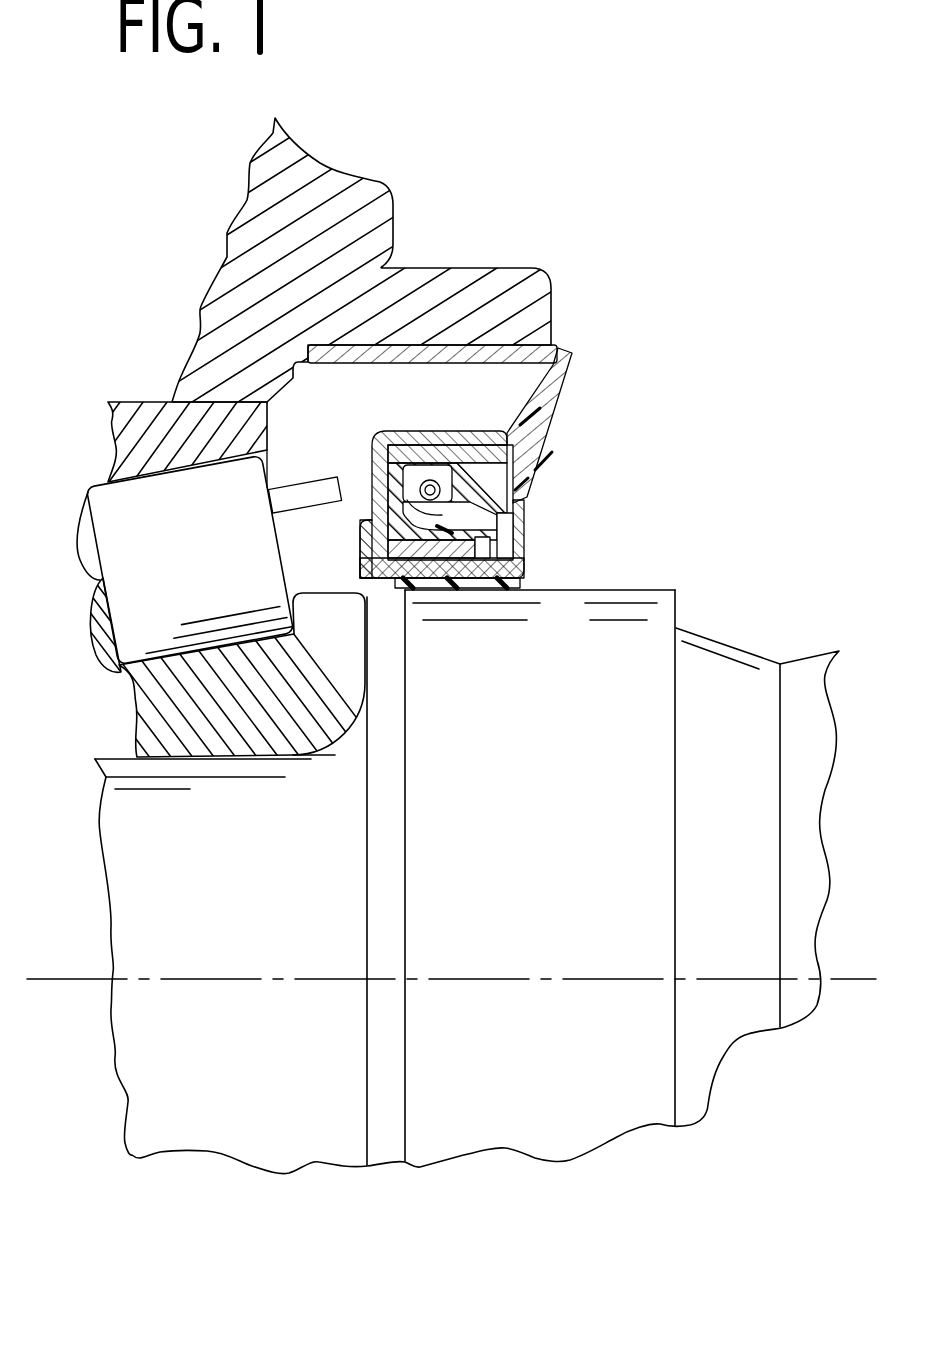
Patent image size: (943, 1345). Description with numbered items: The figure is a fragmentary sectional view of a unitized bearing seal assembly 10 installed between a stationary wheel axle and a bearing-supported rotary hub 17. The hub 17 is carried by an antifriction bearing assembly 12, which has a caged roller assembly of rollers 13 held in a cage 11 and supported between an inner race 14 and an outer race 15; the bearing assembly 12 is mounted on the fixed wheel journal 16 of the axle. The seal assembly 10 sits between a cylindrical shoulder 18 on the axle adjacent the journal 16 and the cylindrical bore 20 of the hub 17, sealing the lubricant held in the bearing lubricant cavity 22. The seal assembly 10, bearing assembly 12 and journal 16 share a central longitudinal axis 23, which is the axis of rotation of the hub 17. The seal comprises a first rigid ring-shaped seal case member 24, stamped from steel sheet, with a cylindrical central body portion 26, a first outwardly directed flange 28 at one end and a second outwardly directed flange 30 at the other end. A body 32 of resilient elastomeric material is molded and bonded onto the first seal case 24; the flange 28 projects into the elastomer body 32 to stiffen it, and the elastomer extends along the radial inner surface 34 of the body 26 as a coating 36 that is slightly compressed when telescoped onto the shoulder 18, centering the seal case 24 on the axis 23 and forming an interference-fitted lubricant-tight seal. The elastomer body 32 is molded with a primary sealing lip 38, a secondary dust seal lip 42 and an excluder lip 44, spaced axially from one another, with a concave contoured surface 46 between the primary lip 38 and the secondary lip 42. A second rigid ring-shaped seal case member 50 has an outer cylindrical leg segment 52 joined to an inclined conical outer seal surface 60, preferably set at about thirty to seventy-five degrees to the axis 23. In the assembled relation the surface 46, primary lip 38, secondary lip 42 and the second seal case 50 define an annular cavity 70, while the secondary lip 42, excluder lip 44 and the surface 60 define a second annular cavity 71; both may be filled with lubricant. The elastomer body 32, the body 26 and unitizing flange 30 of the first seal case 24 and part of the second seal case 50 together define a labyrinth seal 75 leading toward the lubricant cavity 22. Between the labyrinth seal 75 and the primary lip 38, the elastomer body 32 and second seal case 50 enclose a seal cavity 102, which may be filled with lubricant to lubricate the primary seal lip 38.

The unitized bearing seal assembly 10 is at (497, 501).
The cage 11 is at (287, 497).
The antifriction bearing assembly 12 is at (197, 539).
The rollers 13 is at (100, 527).
The inner race 14 is at (110, 447).
The outer race 15 is at (150, 710).
The wheel journal 16 is at (318, 1147).
The hub 17 is at (503, 280).
The cylindrical shoulder 18 is at (677, 625).
The cylindrical bore 20 is at (557, 347).
The bearing lubricant cavity 22 is at (298, 548).
The central longitudinal axis 23 is at (185, 980).
The first seal case member 24 is at (515, 537).
The central body portion 26 is at (467, 590).
The first outwardly directed flange 28 is at (512, 548).
The second outwardly directed flange 30 is at (360, 557).
The elastomer body 32 is at (552, 443).
The radial inner surface 34 is at (505, 592).
The elastomer coating 36 is at (428, 590).
The primary sealing lip 38 is at (408, 440).
The secondary lip 42 is at (531, 482).
The excluder lip 44 is at (562, 420).
The contoured surface 46 is at (453, 457).
The second seal case member 50 is at (373, 441).
The outer cylindrical leg segment 52 is at (363, 353).
The outer seal surface 60 is at (578, 387).
The annular cavity 70 is at (471, 452).
The annular cavity 71 is at (510, 457).
The labyrinth seal 75 is at (373, 590).
The seal cavity 102 is at (373, 497).